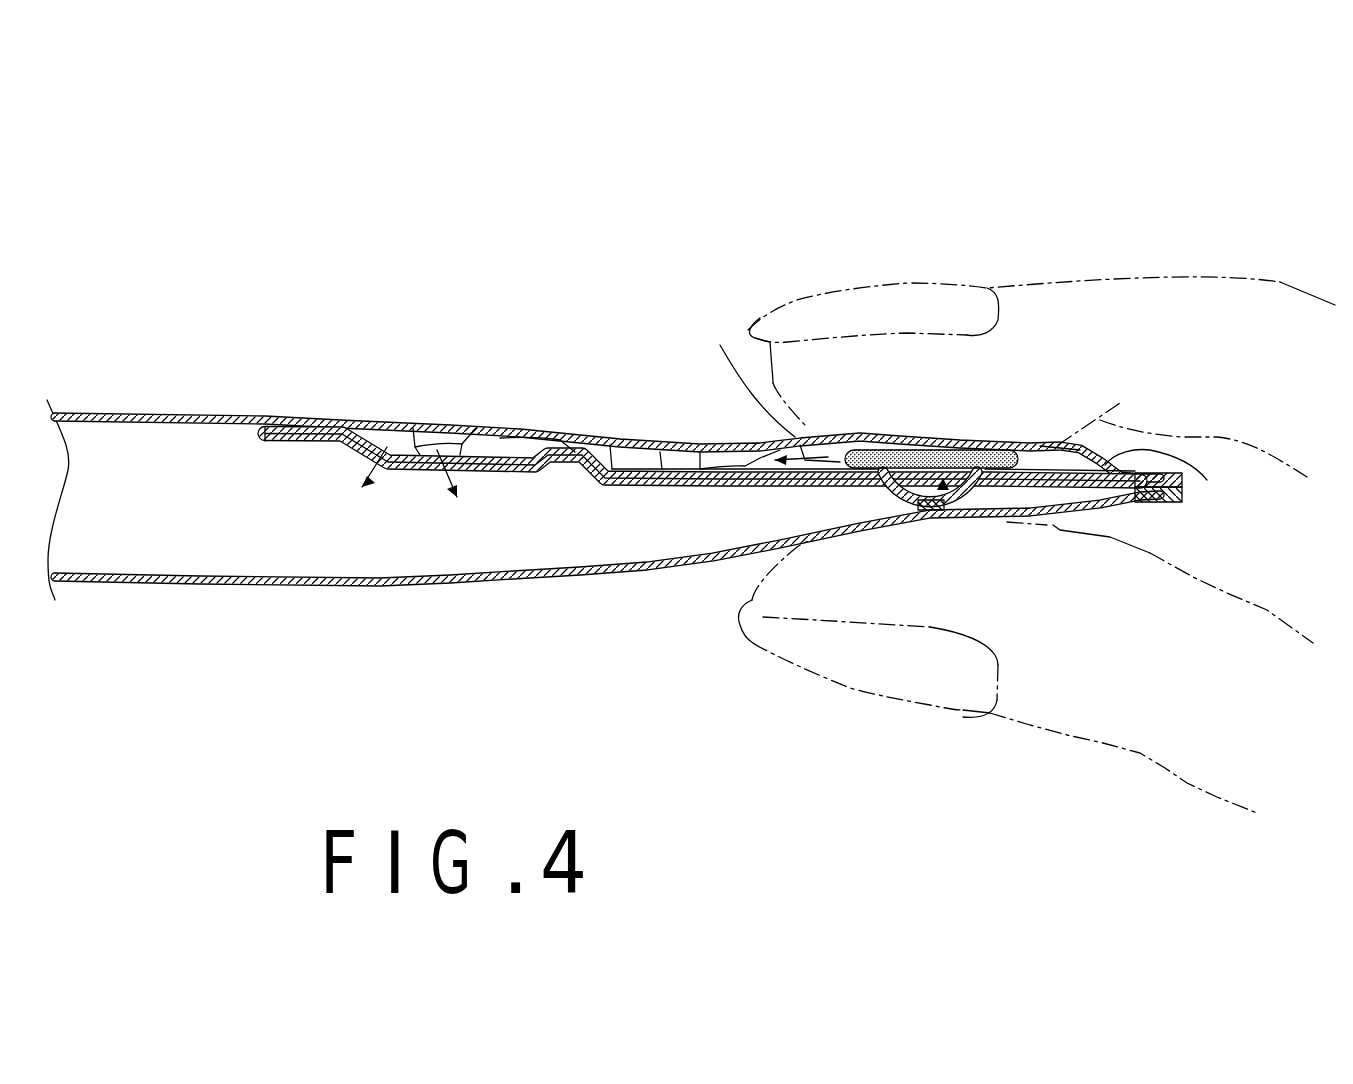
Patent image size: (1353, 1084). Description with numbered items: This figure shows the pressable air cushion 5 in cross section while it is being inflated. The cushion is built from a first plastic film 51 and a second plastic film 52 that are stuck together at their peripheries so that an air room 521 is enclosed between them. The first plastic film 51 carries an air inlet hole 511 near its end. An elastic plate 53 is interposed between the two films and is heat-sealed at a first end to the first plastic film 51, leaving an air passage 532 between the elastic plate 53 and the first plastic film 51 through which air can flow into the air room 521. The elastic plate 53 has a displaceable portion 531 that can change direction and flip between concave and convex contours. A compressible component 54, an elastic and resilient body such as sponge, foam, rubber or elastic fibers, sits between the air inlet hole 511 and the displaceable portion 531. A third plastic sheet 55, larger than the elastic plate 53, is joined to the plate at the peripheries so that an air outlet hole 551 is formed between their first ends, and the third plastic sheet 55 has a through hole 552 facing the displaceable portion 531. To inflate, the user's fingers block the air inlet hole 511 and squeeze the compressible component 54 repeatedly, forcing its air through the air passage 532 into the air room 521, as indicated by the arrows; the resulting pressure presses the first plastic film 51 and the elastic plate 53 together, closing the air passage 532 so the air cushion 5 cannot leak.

The pressable air cushion 5 is at (242, 317).
The first plastic film 51 is at (150, 413).
The air inlet hole 511 is at (932, 450).
The second plastic film 52 is at (140, 583).
The air room 521 is at (230, 534).
The elastic plate 53 is at (630, 485).
The displaceable portion 531 is at (960, 500).
The air passage 532 is at (483, 445).
The compressible component 54 is at (830, 452).
The third plastic sheet 55 is at (668, 492).
The air outlet hole 551 is at (1209, 507).
The through hole 552 is at (927, 515).